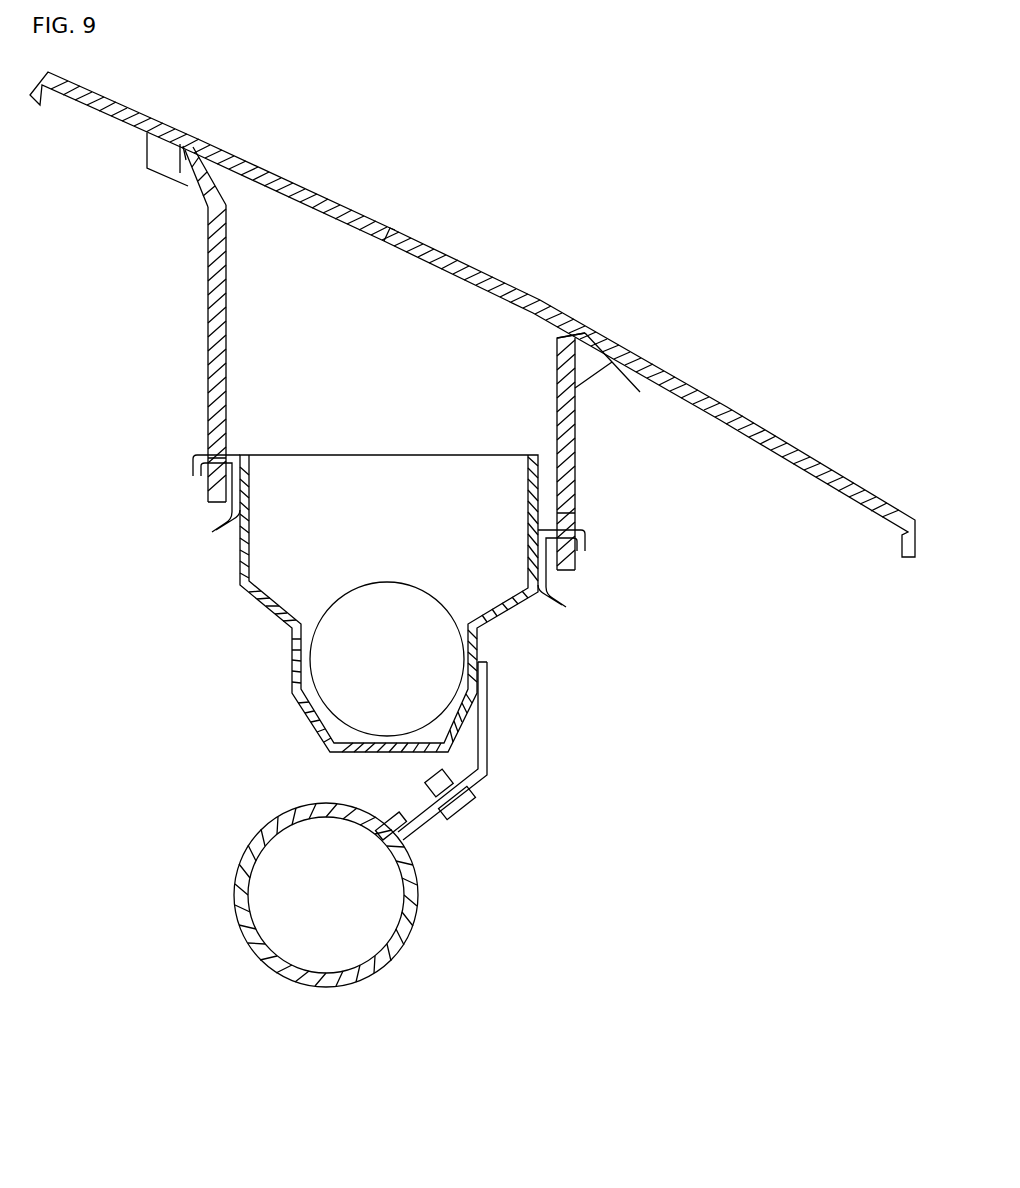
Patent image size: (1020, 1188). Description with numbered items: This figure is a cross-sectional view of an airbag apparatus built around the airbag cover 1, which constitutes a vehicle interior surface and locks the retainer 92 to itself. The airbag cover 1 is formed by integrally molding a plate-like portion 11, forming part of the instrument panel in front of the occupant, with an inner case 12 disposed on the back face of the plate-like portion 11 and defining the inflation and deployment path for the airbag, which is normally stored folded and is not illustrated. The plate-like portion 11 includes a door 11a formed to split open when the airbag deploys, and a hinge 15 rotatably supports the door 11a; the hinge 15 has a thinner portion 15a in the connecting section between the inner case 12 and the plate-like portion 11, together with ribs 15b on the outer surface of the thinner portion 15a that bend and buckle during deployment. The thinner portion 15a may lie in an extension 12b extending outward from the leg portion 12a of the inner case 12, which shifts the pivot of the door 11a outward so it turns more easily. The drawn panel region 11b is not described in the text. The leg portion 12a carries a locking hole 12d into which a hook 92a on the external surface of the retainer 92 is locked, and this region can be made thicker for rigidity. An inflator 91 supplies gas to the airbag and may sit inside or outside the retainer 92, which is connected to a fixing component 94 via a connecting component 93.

The airbag cover 1 is at (549, 190).
The plate-like portion 11 is at (472, 314).
The door 11a is at (297, 184).
The bent portion of roof panel 11b is at (395, 230).
The inner case 12 is at (380, 358).
The leg portion 12a is at (230, 380).
The extension 12b is at (188, 183).
The locking hole 12d is at (227, 443).
The hinge 15 is at (369, 309).
The thinner portion 15a is at (186, 151).
The rib 15b is at (153, 157).
The inflator 91 is at (405, 622).
The retainer 92 is at (389, 591).
The hook 92a is at (196, 457).
The connecting component 93 is at (488, 741).
The fixing component 94 is at (255, 953).